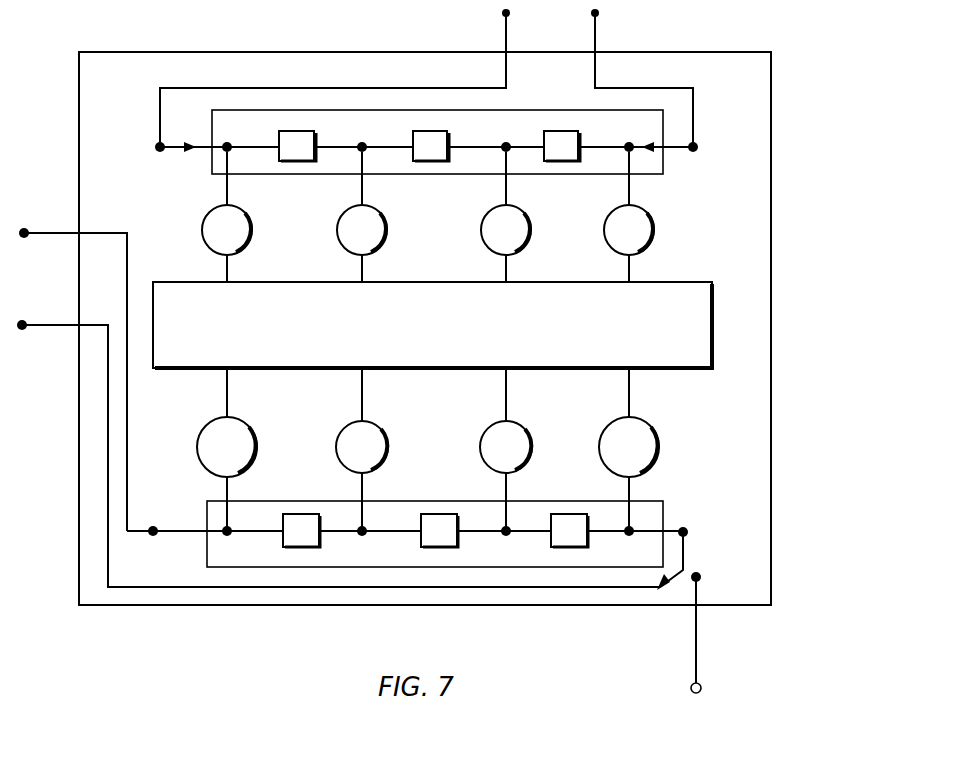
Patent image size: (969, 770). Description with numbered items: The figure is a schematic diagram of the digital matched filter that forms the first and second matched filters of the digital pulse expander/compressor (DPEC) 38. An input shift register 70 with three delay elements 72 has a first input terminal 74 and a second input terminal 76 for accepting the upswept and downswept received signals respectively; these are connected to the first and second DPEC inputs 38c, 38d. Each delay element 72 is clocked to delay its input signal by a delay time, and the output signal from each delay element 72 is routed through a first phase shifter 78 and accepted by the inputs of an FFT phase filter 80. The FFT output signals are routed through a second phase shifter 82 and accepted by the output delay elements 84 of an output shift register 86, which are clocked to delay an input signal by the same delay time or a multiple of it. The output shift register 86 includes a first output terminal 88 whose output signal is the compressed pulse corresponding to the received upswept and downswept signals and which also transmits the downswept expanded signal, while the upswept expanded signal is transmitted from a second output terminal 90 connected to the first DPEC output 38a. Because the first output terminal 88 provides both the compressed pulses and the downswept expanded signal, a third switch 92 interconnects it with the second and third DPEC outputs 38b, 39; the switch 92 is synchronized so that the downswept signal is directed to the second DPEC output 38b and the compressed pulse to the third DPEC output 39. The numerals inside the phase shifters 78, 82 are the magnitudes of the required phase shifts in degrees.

The digital pulse expander/compressor 38 is at (771, 262).
The first DPEC output 38a is at (26, 229).
The second DPEC output 38b is at (26, 322).
The first DPEC input 38c is at (510, 14).
The second DPEC input 38d is at (599, 14).
The third DPEC output 39 is at (692, 690).
The input shift register 70 is at (537, 98).
The delay element 72 is at (314, 134).
The first input terminal 74 is at (158, 144).
The second input terminal 76 is at (696, 143).
The first phase shifter 78 is at (248, 214).
The FFT phase filter 80 is at (562, 282).
The second phase shifter 82 is at (252, 430).
The output delay element 84 is at (320, 544).
The output shift register 86 is at (422, 490).
The first output terminal 88 is at (687, 528).
The second output terminal 90 is at (155, 536).
The third switch 92 is at (672, 575).